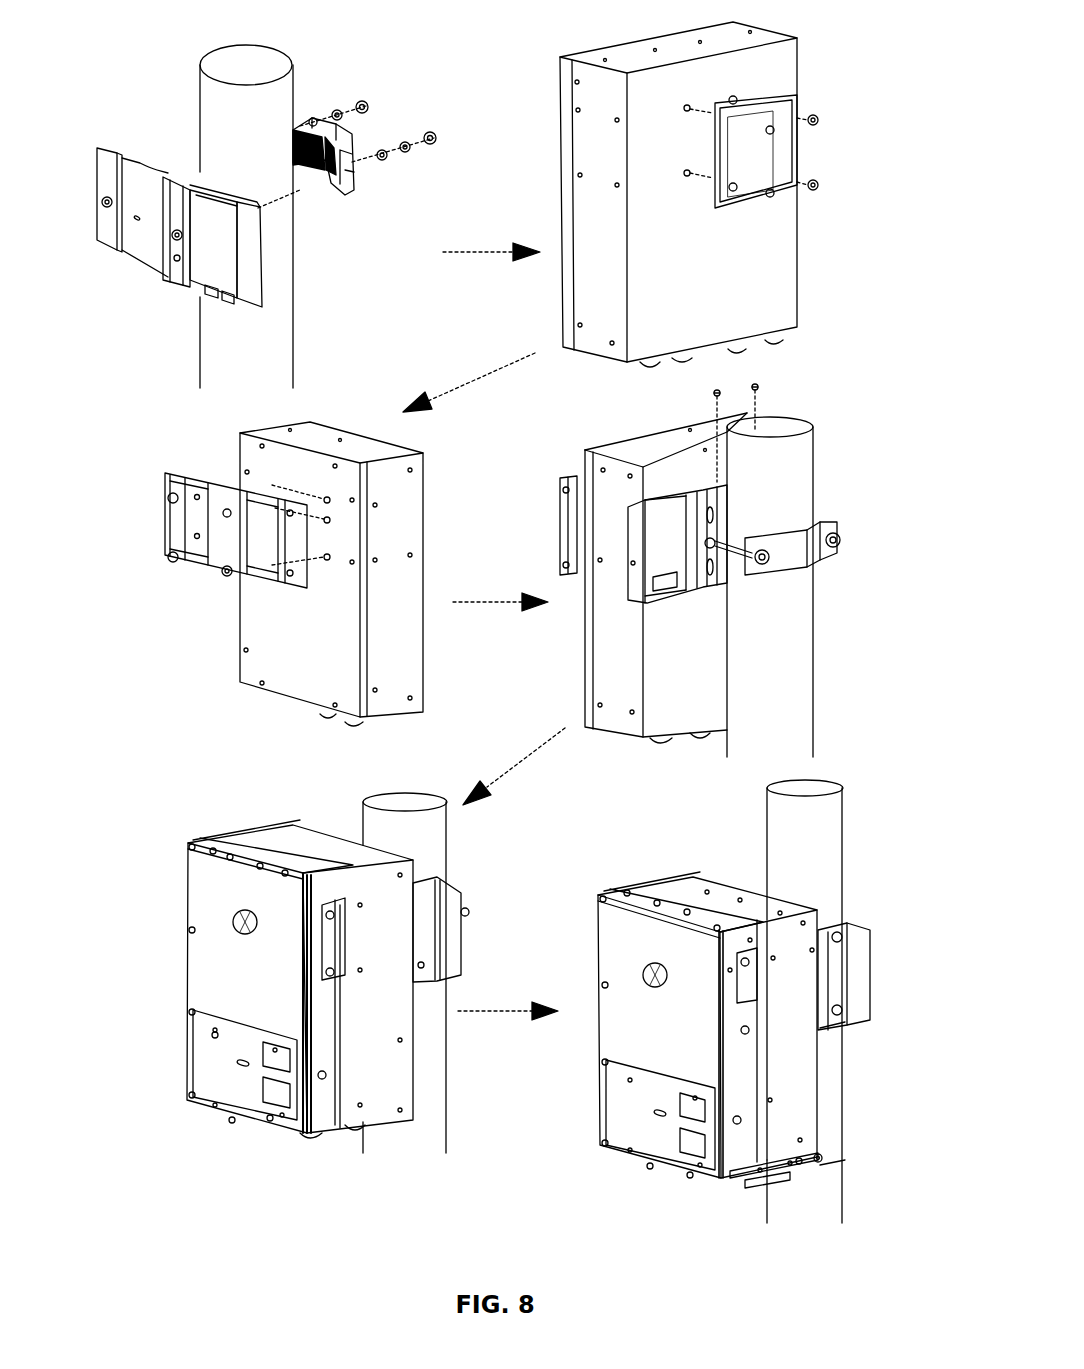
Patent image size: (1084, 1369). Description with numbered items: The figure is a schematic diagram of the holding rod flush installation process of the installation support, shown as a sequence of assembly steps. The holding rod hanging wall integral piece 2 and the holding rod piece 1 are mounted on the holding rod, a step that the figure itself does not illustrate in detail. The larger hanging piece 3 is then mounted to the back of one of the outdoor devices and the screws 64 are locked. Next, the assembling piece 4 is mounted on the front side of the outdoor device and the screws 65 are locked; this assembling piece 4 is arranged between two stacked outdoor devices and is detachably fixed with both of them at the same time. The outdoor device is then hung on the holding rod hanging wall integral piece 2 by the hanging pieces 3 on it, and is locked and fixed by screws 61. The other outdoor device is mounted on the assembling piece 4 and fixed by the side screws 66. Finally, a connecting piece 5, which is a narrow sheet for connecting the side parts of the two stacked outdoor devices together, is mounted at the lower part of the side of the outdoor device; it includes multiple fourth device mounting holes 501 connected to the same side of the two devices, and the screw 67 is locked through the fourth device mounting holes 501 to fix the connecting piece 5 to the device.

The holding rod piece 1 is at (354, 192).
The holding rod hanging wall integral piece 2 is at (157, 253).
The hanging piece 3 is at (753, 97).
The assembling piece 4 is at (213, 477).
The connecting piece 5 is at (787, 1151).
The screws 61 is at (764, 390).
The screws 64 is at (820, 120).
The screws 65 is at (223, 576).
The side screws 66 is at (300, 982).
The bolts 67 is at (826, 1167).
The fourth device mounting holes 501 is at (802, 1164).